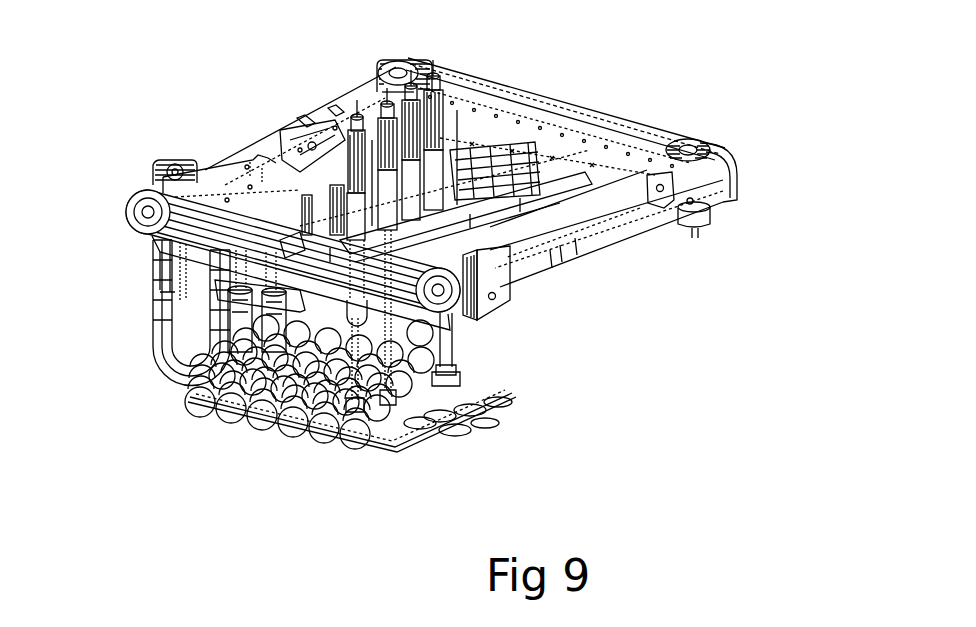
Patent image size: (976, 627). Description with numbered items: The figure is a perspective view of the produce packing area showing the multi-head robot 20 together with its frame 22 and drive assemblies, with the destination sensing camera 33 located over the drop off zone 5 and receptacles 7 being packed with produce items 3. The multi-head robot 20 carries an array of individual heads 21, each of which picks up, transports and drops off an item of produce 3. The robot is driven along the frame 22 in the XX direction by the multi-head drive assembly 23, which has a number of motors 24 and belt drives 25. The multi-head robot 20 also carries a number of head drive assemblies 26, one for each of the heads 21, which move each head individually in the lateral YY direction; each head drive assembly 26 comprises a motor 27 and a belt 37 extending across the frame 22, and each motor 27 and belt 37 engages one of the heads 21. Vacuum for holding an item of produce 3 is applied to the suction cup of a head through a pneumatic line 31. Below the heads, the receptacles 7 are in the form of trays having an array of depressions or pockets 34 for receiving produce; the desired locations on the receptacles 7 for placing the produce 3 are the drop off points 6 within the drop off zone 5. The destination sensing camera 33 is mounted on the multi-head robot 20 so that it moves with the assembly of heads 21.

The produce items 3 is at (335, 435).
The drop off zone 5 is at (205, 462).
The drop off points 6 is at (477, 413).
The receptacles 7 is at (392, 458).
The multi-head robot 20 is at (505, 185).
The individual heads 21 is at (450, 180).
The frame 22 is at (548, 132).
The multi-head drive assembly 23 is at (515, 307).
The motors 24 is at (650, 135).
The belt drives 25 is at (660, 200).
The head drive assemblies 26 is at (183, 378).
The motor 27 is at (235, 352).
The pneumatic line 31 is at (530, 195).
The destination sensing camera 33 is at (300, 140).
The pockets 34 is at (480, 420).
The belt 37 is at (262, 310).